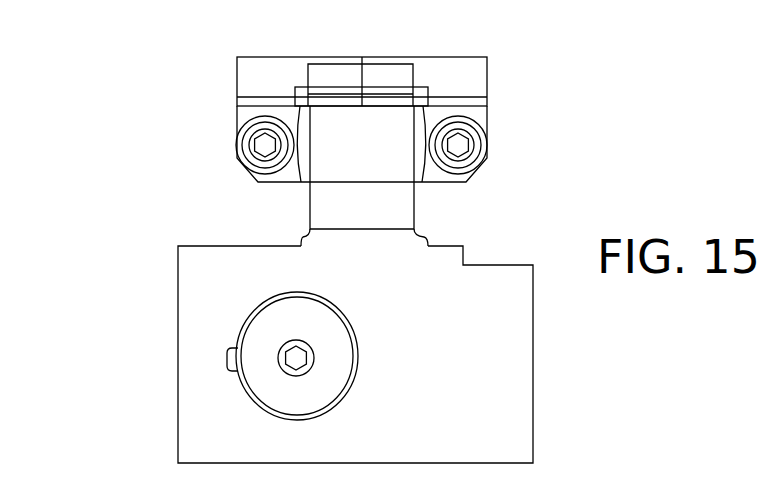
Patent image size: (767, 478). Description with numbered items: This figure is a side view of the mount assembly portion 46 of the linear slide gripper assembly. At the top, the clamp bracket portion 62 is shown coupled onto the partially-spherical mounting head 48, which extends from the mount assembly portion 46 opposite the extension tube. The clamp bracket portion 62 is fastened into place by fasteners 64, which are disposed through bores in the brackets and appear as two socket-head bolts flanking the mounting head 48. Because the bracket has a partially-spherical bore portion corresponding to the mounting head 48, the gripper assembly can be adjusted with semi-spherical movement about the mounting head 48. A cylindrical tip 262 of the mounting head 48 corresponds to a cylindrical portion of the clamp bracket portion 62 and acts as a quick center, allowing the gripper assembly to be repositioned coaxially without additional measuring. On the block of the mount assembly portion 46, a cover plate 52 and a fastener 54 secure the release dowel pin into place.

The mount assembly portion 46 is at (156, 352).
The partially-spherical mounting head 48 is at (423, 106).
The cover plate 52 is at (327, 324).
The fastener 54 is at (300, 362).
The clamp bracket portion 62 is at (492, 56).
The fasteners 64 is at (474, 147).
The cylindrical tip 262 is at (380, 88).